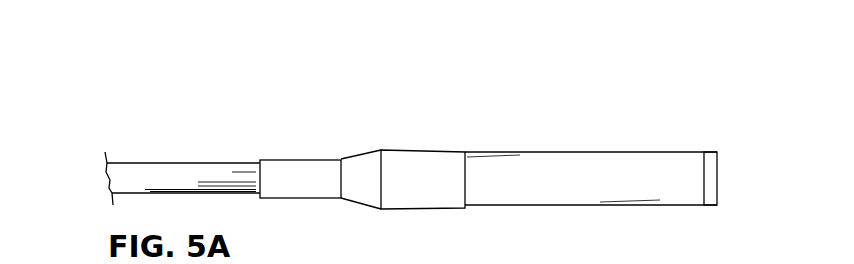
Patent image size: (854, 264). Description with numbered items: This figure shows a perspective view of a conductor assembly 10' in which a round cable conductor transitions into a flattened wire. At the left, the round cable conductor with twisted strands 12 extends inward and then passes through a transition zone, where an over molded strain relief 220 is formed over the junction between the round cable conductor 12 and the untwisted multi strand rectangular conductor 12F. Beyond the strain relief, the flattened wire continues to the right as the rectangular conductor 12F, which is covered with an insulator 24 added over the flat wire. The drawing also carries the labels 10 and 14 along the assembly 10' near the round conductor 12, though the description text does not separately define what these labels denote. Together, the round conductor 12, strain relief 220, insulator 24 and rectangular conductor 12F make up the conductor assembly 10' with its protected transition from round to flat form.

The conductor assembly 10' is at (121, 79).
The medical device assembly 10 is at (386, 131).
The round cable conductor with twisted strands 12 is at (107, 183).
The tube wall 14 is at (183, 162).
The over molded strain relief 220 is at (393, 146).
The insulator 24 is at (565, 165).
The untwisted multi strand rectangular conductor 12F is at (710, 153).